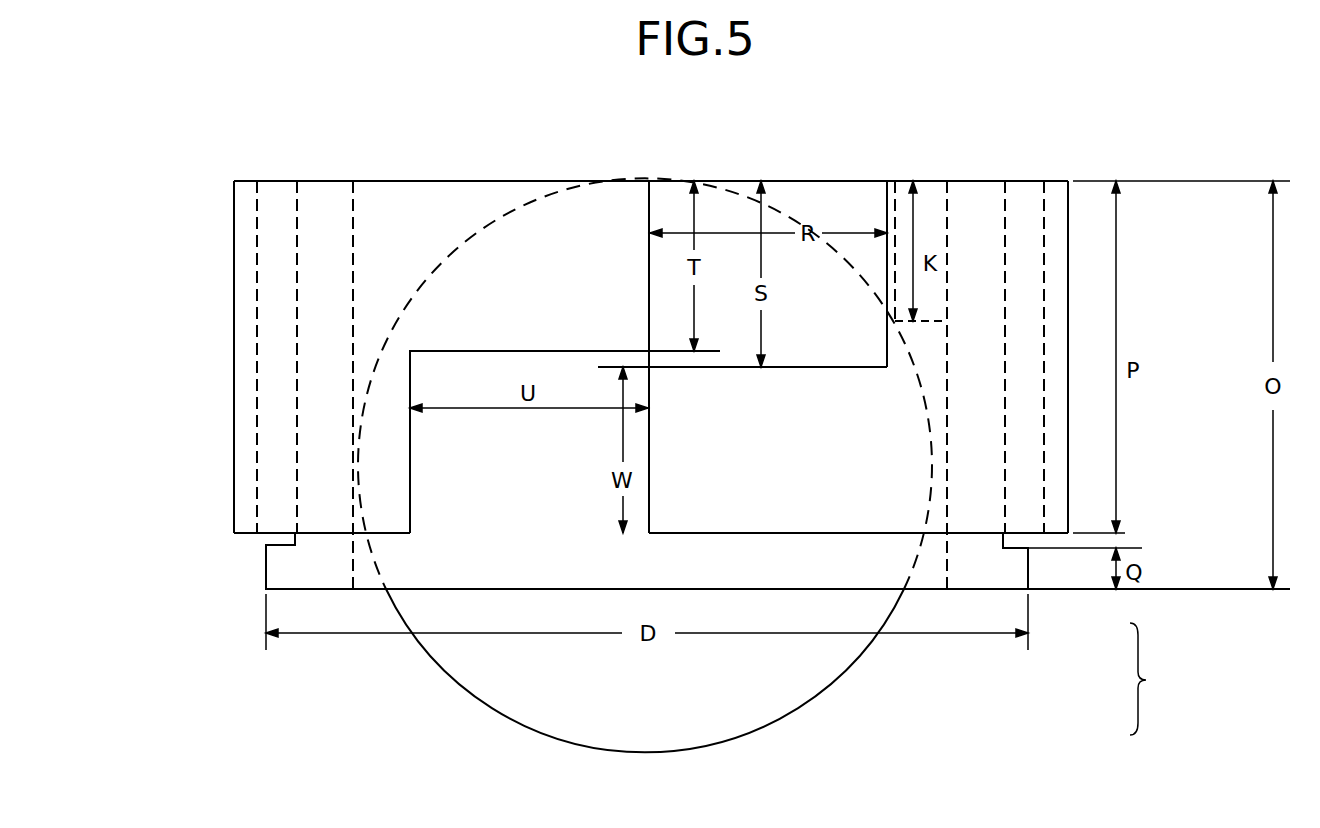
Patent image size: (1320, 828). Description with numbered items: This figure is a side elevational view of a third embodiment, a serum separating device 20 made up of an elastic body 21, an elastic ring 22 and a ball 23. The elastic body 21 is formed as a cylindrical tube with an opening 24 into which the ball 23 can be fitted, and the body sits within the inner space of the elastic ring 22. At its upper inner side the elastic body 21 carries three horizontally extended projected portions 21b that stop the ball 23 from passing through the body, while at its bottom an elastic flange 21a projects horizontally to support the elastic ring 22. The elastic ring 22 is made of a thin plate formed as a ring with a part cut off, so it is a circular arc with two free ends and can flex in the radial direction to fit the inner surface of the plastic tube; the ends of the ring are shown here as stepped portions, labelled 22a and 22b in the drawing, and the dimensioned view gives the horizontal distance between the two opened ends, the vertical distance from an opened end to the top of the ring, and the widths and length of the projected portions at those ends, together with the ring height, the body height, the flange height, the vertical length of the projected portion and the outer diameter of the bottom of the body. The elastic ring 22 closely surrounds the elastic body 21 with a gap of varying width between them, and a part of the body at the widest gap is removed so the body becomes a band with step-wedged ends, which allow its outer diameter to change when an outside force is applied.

The serum separating device 20 is at (1154, 679).
The elastic body 21 is at (973, 510).
The elastic flange 21a is at (288, 564).
The projected portions 21b is at (930, 215).
The elastic ring 22 is at (1057, 493).
The upper cavity edge of inner member 22a is at (652, 215).
The lower cavity wall of inner member 22b is at (645, 505).
The ball 23 is at (813, 685).
The opening 24 is at (400, 235).